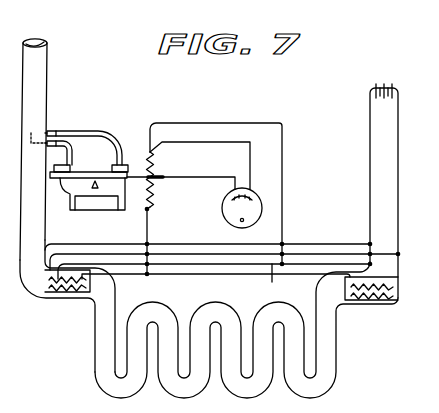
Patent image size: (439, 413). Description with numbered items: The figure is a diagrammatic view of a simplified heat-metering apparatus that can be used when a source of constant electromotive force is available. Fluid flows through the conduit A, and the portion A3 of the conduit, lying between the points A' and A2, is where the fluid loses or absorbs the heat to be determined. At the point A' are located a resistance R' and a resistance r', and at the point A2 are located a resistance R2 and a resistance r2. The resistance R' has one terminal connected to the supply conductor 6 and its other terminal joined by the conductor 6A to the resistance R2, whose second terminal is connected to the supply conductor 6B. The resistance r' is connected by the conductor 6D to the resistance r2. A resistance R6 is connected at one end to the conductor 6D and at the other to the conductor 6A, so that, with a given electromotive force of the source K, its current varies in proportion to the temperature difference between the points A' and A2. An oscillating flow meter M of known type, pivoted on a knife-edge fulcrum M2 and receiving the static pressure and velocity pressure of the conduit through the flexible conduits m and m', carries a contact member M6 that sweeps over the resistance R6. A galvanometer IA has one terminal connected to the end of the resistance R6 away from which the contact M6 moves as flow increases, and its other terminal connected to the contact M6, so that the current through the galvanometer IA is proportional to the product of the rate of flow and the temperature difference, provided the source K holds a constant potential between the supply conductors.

The conduit A is at (42, 149).
The flexible conduit m' is at (52, 126).
The flexible conduit m is at (89, 135).
The flow meter M is at (142, 178).
The knife-edge fulcrum M2 is at (94, 188).
The resistance R6 is at (148, 151).
The contact member M6 is at (158, 182).
The galvanometer IA is at (224, 208).
The conductor 6 is at (370, 169).
The conductor 6B is at (399, 129).
The source of current K is at (384, 81).
The resistance r' is at (67, 273).
The point in conduit A' is at (67, 306).
The resistance R' is at (67, 304).
The conductor 6A is at (159, 272).
The portion of conduit A3 is at (221, 304).
The conductor 6D is at (266, 282).
The resistance r2 is at (371, 286).
The resistance R2 is at (365, 302).
The point in conduit A2 is at (383, 306).